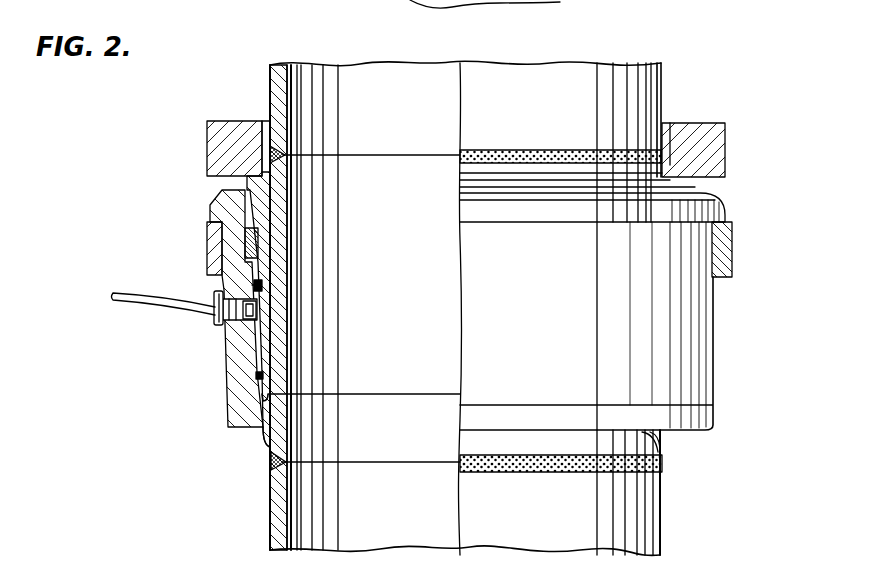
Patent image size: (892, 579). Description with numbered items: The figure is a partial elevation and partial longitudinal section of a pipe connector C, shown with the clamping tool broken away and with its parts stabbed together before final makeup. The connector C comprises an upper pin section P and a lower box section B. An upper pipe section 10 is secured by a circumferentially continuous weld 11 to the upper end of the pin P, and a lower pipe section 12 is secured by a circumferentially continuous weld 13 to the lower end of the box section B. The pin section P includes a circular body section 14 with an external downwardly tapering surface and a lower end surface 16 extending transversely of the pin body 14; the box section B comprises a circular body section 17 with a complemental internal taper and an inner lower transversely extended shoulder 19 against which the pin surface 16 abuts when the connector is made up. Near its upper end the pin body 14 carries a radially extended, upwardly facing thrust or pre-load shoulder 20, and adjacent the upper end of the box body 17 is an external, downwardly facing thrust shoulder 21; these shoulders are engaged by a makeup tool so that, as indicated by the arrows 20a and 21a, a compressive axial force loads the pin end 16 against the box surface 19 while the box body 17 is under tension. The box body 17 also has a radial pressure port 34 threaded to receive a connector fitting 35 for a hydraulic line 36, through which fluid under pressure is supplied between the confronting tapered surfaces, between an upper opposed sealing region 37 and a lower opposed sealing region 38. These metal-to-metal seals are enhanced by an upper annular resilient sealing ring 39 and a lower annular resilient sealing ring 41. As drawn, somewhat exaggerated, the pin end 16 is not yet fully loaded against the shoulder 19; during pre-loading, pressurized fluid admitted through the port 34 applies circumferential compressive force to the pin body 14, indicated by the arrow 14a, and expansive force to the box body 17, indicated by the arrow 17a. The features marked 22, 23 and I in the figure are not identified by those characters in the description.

The upper pipe section 10 is at (625, 72).
The circumferentially continuous weld 11 is at (535, 152).
The lower pipe section 12 is at (662, 507).
The circumferentially continuous weld 13 is at (662, 463).
The pin body section 14 is at (277, 285).
The arrow indicating circumferential compressive force 14a is at (243, 361).
The lower end surface 16 is at (262, 432).
The box body section 17 is at (232, 340).
The arrow indicating expansive force 17a is at (270, 348).
The inner lower transverse shoulder 19 is at (282, 395).
The thrust or pre-load shoulder 20 is at (247, 175).
The arrow indicating compressive axial force 20a is at (722, 63).
The thrust shoulder 21 is at (207, 228).
The arrow indicating tool force on box 21a is at (730, 290).
The flange 22 is at (722, 130).
The collar 23 is at (733, 252).
The radial pressure port 34 is at (250, 310).
The connector fitting 35 is at (215, 320).
The hydraulic line 36 is at (123, 302).
The upper opposed sealing region 37 is at (263, 283).
The lower opposed sealing region 38 is at (265, 361).
The upper annular resilient sealing ring 39 is at (254, 287).
The lower annular resilient sealing ring 41 is at (257, 376).
The seal indicator I is at (240, 242).
The pin section P is at (692, 168).
The pipe connector C is at (752, 205).
The box section B is at (720, 368).